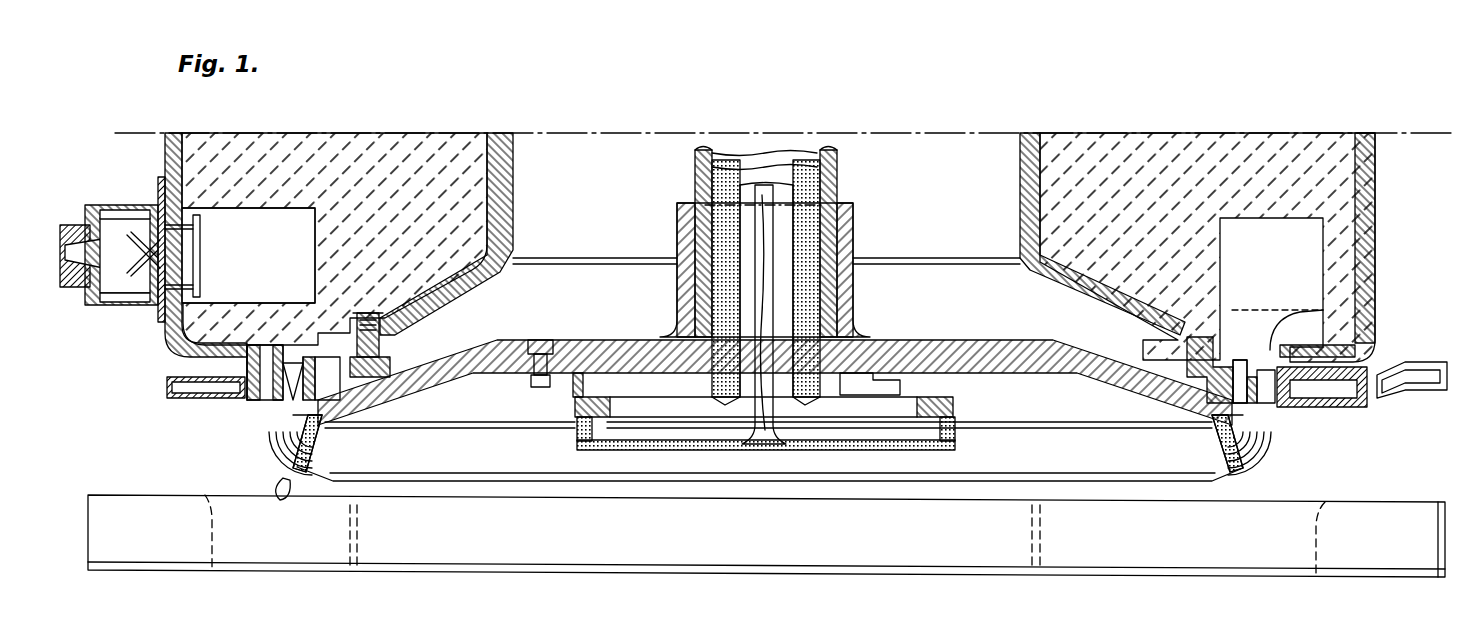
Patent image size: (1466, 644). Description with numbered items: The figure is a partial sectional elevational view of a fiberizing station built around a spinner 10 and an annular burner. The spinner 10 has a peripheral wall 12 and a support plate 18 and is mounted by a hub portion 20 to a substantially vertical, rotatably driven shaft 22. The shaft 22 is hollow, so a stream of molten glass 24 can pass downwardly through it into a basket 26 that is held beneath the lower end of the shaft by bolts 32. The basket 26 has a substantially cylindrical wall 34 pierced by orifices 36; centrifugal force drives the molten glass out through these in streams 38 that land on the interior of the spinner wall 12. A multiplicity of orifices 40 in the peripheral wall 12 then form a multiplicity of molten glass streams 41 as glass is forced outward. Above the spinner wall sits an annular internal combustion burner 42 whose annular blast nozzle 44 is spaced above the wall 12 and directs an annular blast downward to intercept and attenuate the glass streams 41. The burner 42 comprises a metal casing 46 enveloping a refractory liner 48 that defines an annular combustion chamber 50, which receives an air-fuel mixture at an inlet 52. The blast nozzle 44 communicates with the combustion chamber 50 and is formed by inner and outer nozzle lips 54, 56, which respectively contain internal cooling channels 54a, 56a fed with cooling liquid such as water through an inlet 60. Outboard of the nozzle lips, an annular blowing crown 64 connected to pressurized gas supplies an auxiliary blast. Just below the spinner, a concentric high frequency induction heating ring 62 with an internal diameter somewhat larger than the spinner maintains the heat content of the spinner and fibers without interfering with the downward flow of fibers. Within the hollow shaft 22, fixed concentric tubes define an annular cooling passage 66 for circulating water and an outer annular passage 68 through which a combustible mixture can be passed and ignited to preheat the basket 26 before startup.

The spinner 10 is at (293, 418).
The peripheral wall 12 is at (293, 447).
The support plate 18 is at (583, 347).
The hub portion 20 is at (847, 322).
The shaft 22 is at (833, 143).
The stream of molten glass 24 is at (754, 190).
The basket 26 is at (1007, 466).
The bolts 32 is at (540, 340).
The cylindrical wall 34 is at (577, 440).
The orifices 36 is at (957, 427).
The streams 38 is at (440, 430).
The orifices 40 is at (1213, 438).
The molten glass streams 41 is at (287, 467).
The annular internal combustion burner 42 is at (152, 192).
The annular blast nozzle 44 is at (283, 395).
The metal casing 46 is at (1362, 188).
The refractory liner 48 is at (1347, 227).
The annular combustion chamber 50 is at (277, 239).
The inlet 52 is at (77, 290).
The inner nozzle lip 54 is at (1280, 403).
The internal cooling channel 54a is at (322, 370).
The outer nozzle lip 56 is at (1267, 403).
The internal cooling channel 56a is at (250, 348).
The inlet 60 is at (1425, 368).
The high frequency induction heating ring 62 is at (97, 490).
The annular blowing crown 64 is at (167, 386).
The annular cooling passage 66 is at (792, 222).
The annular passage 68 is at (727, 157).